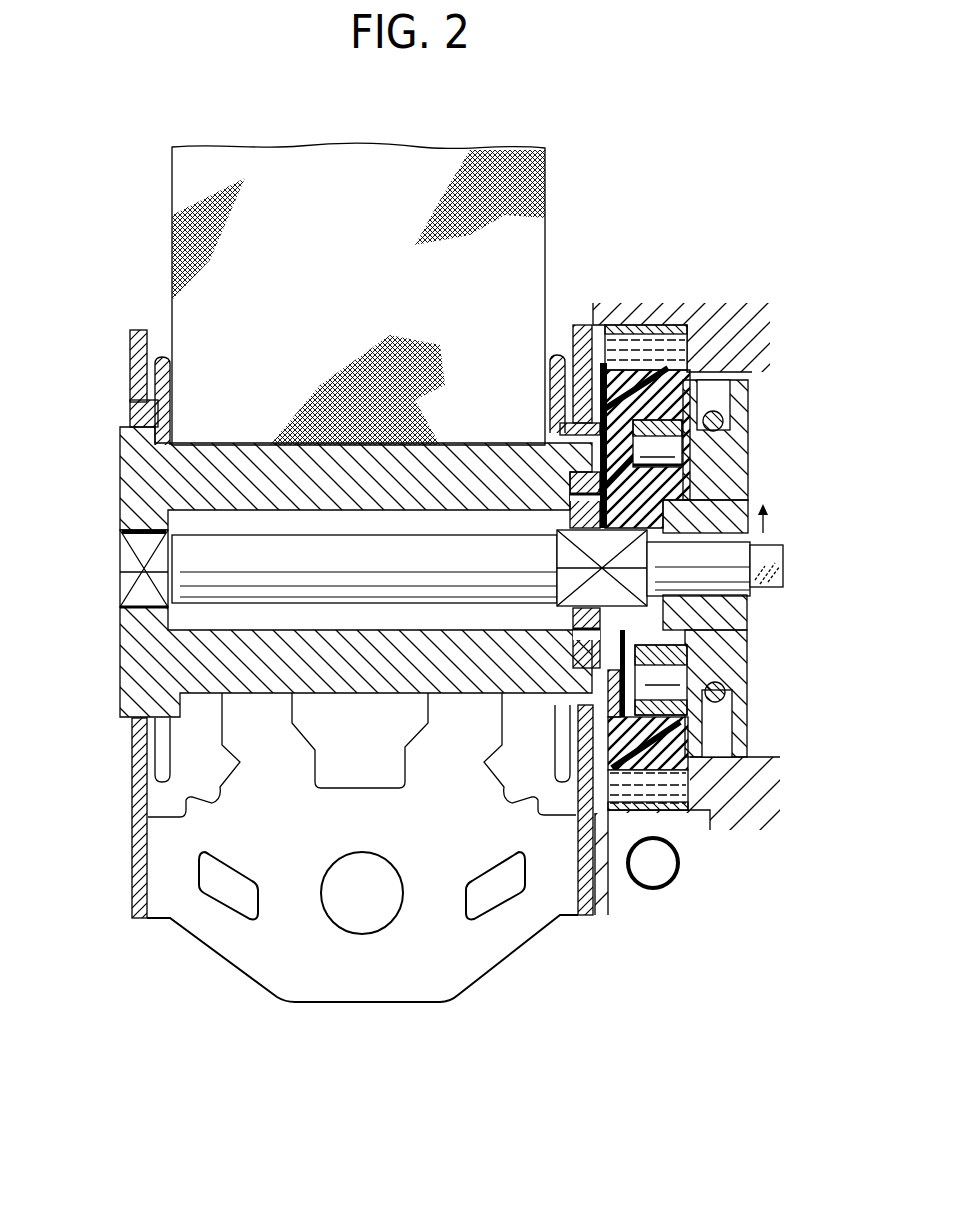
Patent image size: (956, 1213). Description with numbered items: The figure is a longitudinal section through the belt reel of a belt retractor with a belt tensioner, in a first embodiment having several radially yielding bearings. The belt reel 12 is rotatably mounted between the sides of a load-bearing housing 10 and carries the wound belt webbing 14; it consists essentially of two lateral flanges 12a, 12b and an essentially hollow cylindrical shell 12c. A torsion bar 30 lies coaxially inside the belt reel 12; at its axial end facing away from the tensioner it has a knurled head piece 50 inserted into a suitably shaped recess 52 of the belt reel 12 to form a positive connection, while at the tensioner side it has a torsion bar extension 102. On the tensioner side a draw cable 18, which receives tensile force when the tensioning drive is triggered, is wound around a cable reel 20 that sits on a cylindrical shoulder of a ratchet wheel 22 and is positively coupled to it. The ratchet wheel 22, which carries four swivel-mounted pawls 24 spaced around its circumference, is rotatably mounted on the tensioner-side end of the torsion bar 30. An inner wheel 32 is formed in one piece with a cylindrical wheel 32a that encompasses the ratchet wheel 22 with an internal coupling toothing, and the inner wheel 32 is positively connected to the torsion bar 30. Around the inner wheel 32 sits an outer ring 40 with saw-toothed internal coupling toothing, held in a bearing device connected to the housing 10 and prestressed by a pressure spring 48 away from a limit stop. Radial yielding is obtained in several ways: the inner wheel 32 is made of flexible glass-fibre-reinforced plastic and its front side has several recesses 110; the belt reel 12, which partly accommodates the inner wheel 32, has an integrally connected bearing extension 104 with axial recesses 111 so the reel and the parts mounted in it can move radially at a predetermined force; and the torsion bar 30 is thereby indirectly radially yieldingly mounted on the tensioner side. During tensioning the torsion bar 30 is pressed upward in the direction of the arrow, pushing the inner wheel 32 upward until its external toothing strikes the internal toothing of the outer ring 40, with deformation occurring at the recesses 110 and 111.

The load-bearing housing 10 is at (302, 972).
The belt reel 12 is at (325, 499).
The lateral flange 12a is at (557, 355).
The lateral flange 12b is at (160, 365).
The hollow cylindrical shell 12c is at (350, 673).
The belt webbing 14 is at (363, 165).
The draw cable 18 is at (728, 688).
The cable reel 20 is at (740, 385).
The ratchet wheel 22 is at (735, 617).
The pawls 24 is at (665, 455).
The torsion bar 30 is at (178, 605).
The inner wheel 32 is at (667, 758).
The cylindrical wheel 32a is at (627, 520).
The outer ring 40 is at (672, 322).
The pressure spring 48 is at (678, 863).
The knurled head piece 50 is at (128, 585).
The recess 52 is at (125, 537).
The torsion bar extension 102 is at (737, 584).
The bearing extension 104 is at (615, 400).
The recesses 110 is at (612, 632).
The recesses 111 is at (633, 697).